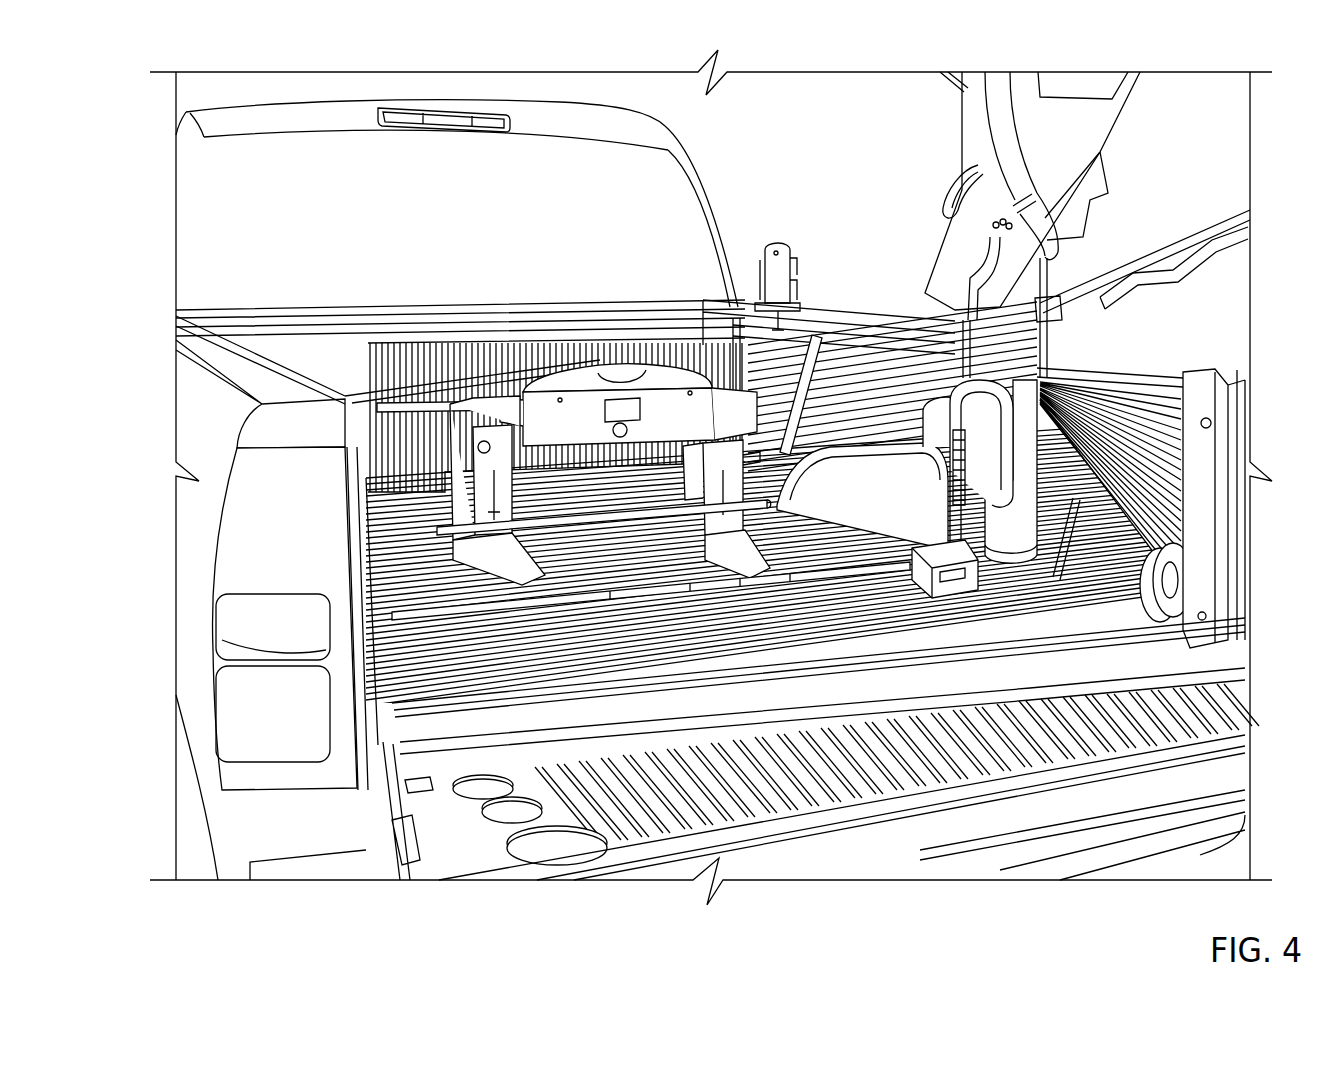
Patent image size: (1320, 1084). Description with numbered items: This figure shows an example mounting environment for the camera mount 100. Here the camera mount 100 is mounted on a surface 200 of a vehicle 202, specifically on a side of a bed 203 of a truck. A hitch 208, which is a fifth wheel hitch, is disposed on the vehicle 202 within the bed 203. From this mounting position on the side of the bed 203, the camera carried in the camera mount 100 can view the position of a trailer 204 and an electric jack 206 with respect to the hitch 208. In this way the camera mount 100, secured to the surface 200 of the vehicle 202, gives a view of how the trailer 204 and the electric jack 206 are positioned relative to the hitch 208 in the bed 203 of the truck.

The camera mount 100 is at (779, 235).
The surface 200 is at (810, 333).
The vehicle 202 is at (183, 529).
The bed 203 is at (395, 692).
The trailer 204 is at (1091, 72).
The electric jack 206 is at (985, 578).
The hitch 208 is at (568, 362).